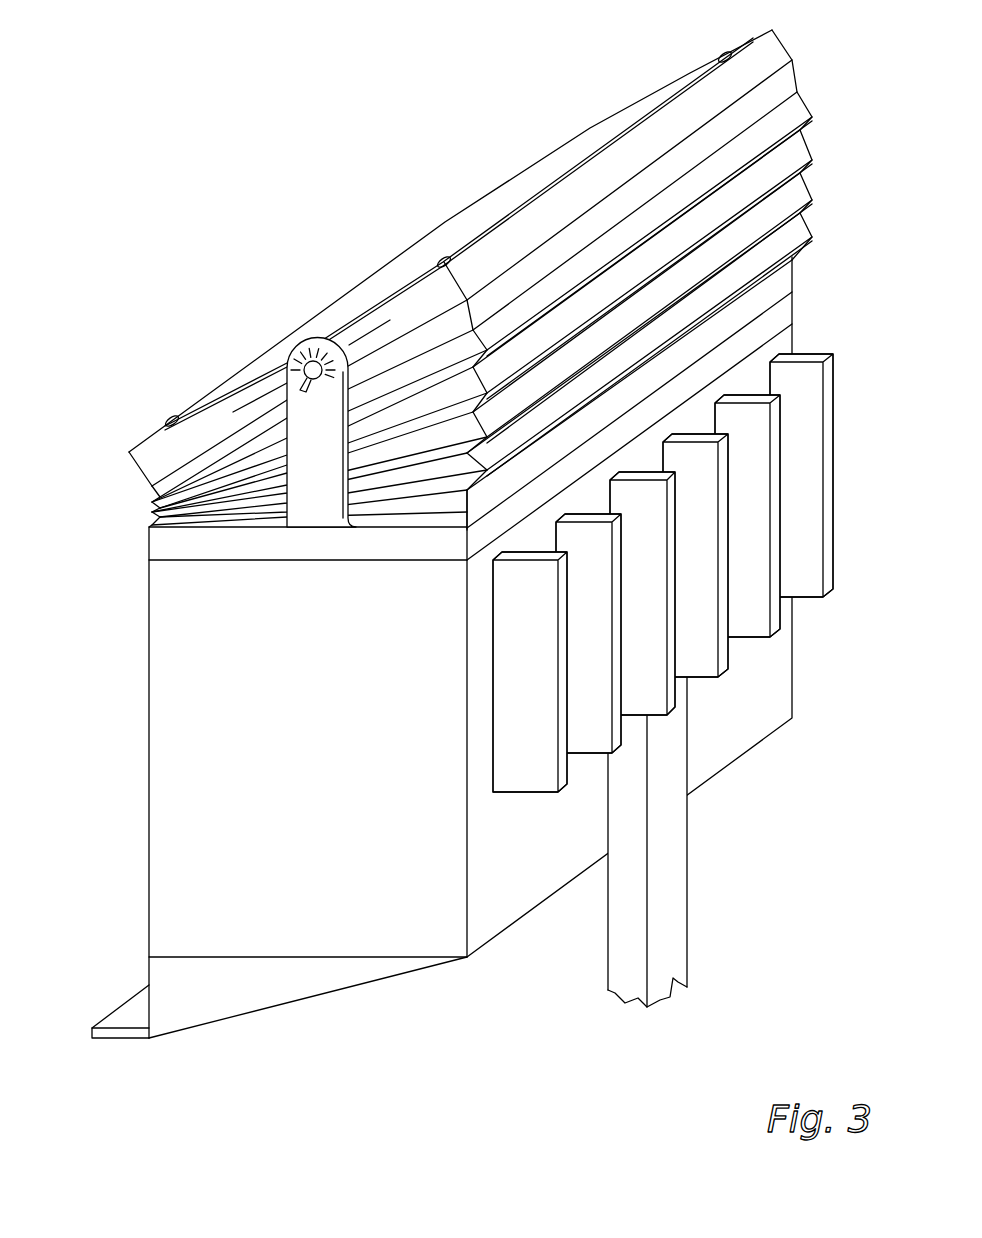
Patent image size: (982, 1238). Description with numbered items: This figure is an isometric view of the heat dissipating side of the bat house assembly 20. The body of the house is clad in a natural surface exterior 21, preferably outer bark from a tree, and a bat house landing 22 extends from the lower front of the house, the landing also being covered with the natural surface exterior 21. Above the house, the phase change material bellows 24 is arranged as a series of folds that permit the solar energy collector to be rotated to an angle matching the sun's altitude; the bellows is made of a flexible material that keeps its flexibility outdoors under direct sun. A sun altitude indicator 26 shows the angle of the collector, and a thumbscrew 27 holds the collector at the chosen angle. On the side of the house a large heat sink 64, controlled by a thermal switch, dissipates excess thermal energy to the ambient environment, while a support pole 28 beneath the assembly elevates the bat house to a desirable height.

The bat house assembly 20 is at (550, 1010).
The natural surface exterior 21 is at (165, 632).
The bat house landing 22 is at (108, 1022).
The phase change material bellows 24 is at (150, 512).
The sun altitude indicator 26 is at (338, 356).
The thumbscrew 27 is at (285, 376).
The support pole 28 is at (680, 923).
The heat sink 64 is at (830, 583).